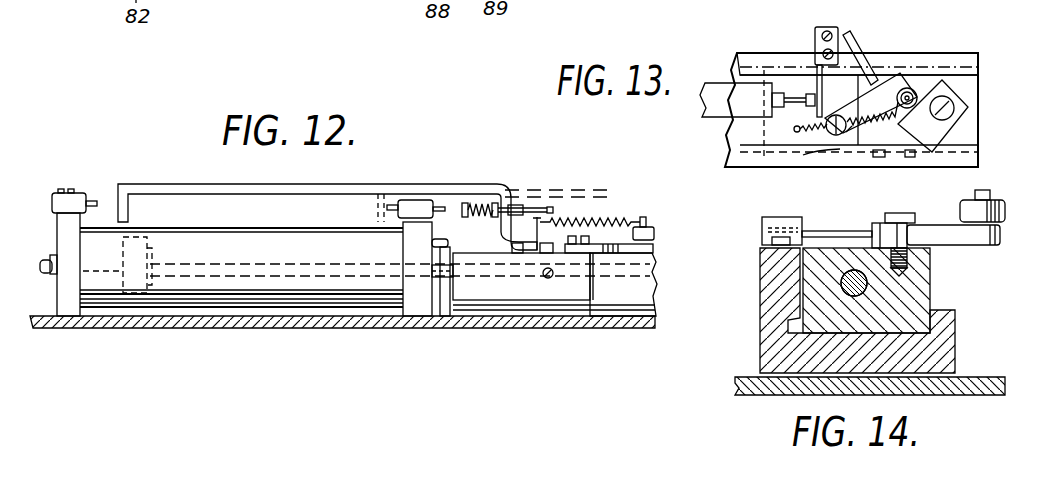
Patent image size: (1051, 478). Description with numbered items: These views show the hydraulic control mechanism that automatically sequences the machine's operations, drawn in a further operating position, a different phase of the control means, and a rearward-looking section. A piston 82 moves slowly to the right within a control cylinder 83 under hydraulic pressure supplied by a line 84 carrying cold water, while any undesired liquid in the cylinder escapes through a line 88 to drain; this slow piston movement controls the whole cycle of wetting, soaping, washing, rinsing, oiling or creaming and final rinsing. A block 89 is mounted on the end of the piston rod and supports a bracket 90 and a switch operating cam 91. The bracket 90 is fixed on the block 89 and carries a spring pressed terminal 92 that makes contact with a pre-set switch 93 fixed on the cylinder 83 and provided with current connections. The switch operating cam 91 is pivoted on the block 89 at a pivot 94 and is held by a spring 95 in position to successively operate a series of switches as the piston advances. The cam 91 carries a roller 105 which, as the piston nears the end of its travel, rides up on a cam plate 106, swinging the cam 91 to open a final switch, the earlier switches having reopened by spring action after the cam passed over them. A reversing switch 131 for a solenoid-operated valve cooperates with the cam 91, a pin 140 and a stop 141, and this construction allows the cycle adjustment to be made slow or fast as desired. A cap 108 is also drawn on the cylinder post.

In FIG. 12, the piston 82 is at (138, 330).
In FIG. 12, the control cylinder 83 is at (292, 218).
In FIG. 12, the line 84 is at (42, 265).
In FIG. 12, the line 88 is at (440, 246).
In FIG. 12, the block 89 is at (513, 289).
In FIG. 13, the block 89 is at (777, 73).
In FIG. 14, the block 89 is at (915, 293).
In FIG. 12, the bracket 90 is at (205, 186).
In FIG. 13, the bracket 90 is at (713, 101).
In FIG. 12, the switch operating cam 91 is at (657, 268).
In FIG. 13, the switch operating cam 91 is at (888, 78).
In FIG. 14, the switch operating cam 91 is at (957, 238).
In FIG. 12, the spring pressed terminal 92 is at (466, 203).
In FIG. 12, the pre-set switch 93 is at (410, 203).
In FIG. 12, the pivot 94 is at (578, 244).
In FIG. 13, the pivot 94 is at (845, 133).
In FIG. 14, the pivot 94 is at (906, 222).
In FIG. 12, the spring 95 is at (618, 214).
In FIG. 13, the spring 95 is at (813, 128).
In FIG. 12, the roller 105 is at (654, 236).
In FIG. 13, the roller 105 is at (873, 148).
In FIG. 14, the roller 105 is at (962, 206).
In FIG. 13, the cam plate 106 is at (928, 138).
In FIG. 12, the cap 108 is at (52, 198).
In FIG. 13, the reversing switch 131 is at (822, 30).
In FIG. 14, the pin 140 is at (857, 228).
In FIG. 14, the stop 141 is at (775, 218).